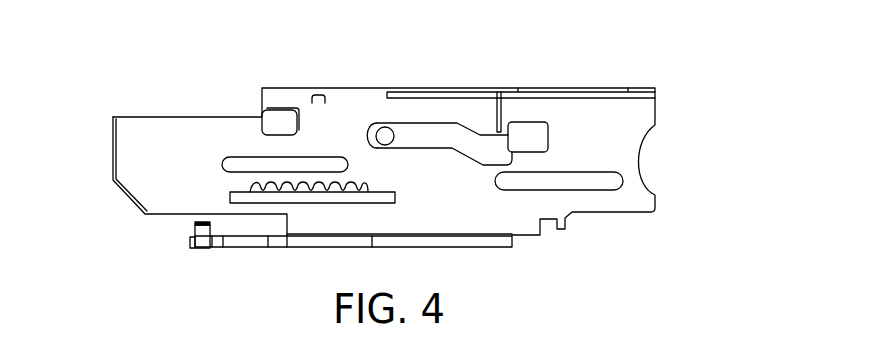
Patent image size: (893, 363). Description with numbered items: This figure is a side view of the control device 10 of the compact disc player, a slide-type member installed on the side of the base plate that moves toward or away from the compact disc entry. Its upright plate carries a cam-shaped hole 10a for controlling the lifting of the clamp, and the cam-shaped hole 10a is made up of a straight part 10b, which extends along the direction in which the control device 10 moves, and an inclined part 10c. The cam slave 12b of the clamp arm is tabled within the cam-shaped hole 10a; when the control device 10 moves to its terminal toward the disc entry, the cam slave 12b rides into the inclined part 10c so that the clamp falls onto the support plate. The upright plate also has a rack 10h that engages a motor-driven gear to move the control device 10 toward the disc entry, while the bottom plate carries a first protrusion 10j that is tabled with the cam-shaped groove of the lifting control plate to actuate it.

The control device 10 is at (655, 123).
The cam-shaped hole 10a is at (548, 10).
The straight part 10b is at (418, 122).
The inclined part 10c is at (487, 130).
The cam slave 12b is at (377, 130).
The rack 10h is at (250, 191).
The first protrusion 10j is at (196, 232).